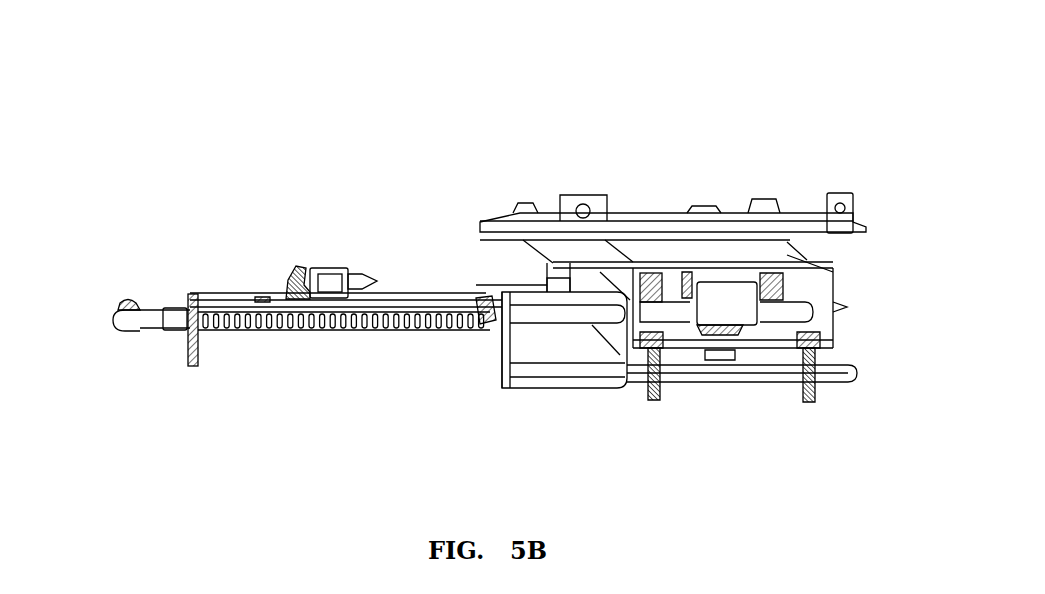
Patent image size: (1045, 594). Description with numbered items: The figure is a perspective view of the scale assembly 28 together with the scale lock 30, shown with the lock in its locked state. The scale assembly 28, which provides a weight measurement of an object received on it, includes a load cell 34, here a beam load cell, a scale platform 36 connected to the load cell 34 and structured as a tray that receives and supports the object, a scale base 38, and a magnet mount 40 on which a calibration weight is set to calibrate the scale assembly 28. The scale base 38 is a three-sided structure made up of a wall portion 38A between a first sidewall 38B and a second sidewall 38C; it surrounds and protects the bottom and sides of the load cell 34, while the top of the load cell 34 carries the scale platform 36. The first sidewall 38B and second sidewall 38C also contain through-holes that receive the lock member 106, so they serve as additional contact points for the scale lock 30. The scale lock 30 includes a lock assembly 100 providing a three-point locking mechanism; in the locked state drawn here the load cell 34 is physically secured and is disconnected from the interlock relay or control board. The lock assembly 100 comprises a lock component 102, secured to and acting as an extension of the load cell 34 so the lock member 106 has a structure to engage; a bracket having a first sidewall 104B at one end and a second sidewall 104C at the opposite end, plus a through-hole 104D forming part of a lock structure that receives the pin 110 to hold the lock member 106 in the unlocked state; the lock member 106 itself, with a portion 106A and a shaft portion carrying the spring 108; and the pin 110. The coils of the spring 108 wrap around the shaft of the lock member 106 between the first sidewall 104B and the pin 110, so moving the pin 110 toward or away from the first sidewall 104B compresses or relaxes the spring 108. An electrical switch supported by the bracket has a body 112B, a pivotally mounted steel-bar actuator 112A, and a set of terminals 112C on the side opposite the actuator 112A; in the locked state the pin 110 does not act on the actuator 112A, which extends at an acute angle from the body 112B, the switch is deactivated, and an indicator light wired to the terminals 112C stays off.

The scale assembly 28 is at (765, 102).
The scale lock 30 is at (367, 102).
The load cell 34 is at (665, 298).
The scale platform 36 is at (634, 215).
The scale base 38 is at (845, 284).
The wall portion 38A is at (682, 332).
The first sidewall 38B is at (627, 327).
The second sidewall 38C is at (822, 325).
The magnet mount 40 is at (721, 358).
The lock assembly 100 is at (88, 245).
The lock component 102 is at (720, 300).
The first sidewall 104B is at (190, 350).
The second sidewall 104C is at (496, 368).
The through-hole 104D is at (262, 298).
The lock member 106 is at (563, 300).
The hook end 106A is at (118, 298).
The spring 108 is at (334, 322).
The pin 110 is at (474, 312).
The actuator 112A is at (298, 278).
The body 112B is at (320, 270).
The set of terminals 112C is at (374, 278).